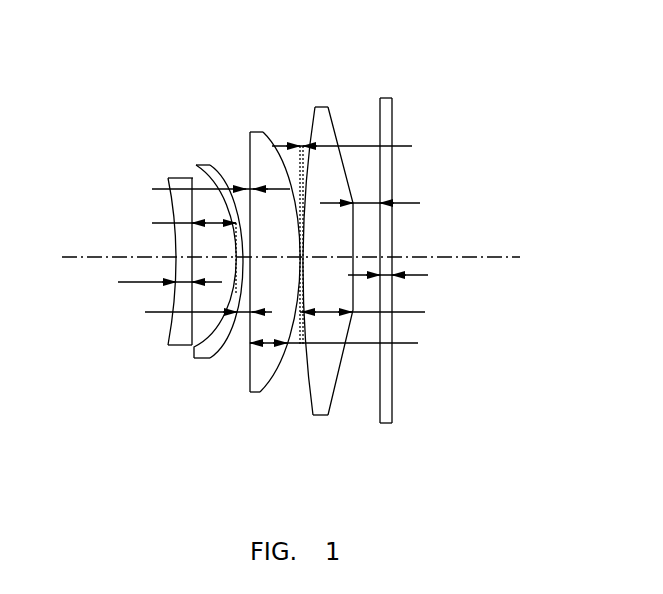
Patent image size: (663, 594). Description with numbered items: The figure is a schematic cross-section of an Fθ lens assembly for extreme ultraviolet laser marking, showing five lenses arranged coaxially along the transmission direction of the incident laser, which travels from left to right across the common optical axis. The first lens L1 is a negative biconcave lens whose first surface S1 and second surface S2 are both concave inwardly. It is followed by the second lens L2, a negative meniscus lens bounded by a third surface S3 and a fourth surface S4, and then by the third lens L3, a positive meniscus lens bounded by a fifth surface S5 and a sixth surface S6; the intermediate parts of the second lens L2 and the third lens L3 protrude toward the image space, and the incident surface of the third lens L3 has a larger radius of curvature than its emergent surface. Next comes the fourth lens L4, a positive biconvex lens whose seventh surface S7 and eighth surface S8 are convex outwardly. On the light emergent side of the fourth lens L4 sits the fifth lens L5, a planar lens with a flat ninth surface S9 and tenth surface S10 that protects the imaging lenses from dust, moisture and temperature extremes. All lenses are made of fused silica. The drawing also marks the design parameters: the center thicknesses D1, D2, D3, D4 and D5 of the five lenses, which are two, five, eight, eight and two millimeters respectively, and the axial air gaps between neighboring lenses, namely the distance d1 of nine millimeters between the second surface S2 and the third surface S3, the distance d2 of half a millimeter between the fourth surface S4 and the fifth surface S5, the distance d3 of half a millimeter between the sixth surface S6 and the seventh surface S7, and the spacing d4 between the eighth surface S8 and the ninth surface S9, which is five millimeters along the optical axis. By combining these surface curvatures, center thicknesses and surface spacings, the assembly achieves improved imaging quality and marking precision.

The first lens L1 is at (116, 261).
The second lens L2 is at (197, 261).
The third lens L3 is at (298, 261).
The fourth lens L4 is at (372, 261).
The fifth lens L5 is at (470, 261).
The first surface S1 is at (169, 326).
The second surface S2 is at (190, 332).
The third surface S3 is at (211, 333).
The fourth surface S4 is at (224, 348).
The fifth surface S5 is at (249, 367).
The sixth surface S6 is at (270, 377).
The seventh surface S7 is at (313, 388).
The eighth surface S8 is at (338, 385).
The ninth surface S9 is at (382, 398).
The tenth surface S10 is at (395, 378).
The distance between second surface and third surface d1 is at (181, 227).
The distance between fourth surface and fifth surface d2 is at (208, 191).
The distance between sixth surface and seventh surface d3 is at (356, 144).
The air gap between fourth and fifth lens d4 is at (384, 203).
The center thickness of first lens D1 is at (159, 283).
The center thickness of second lens D2 is at (193, 312).
The center thickness of third lens D3 is at (350, 347).
The center thickness of fourth lens D4 is at (379, 312).
The center thickness of fifth lens D5 is at (403, 277).